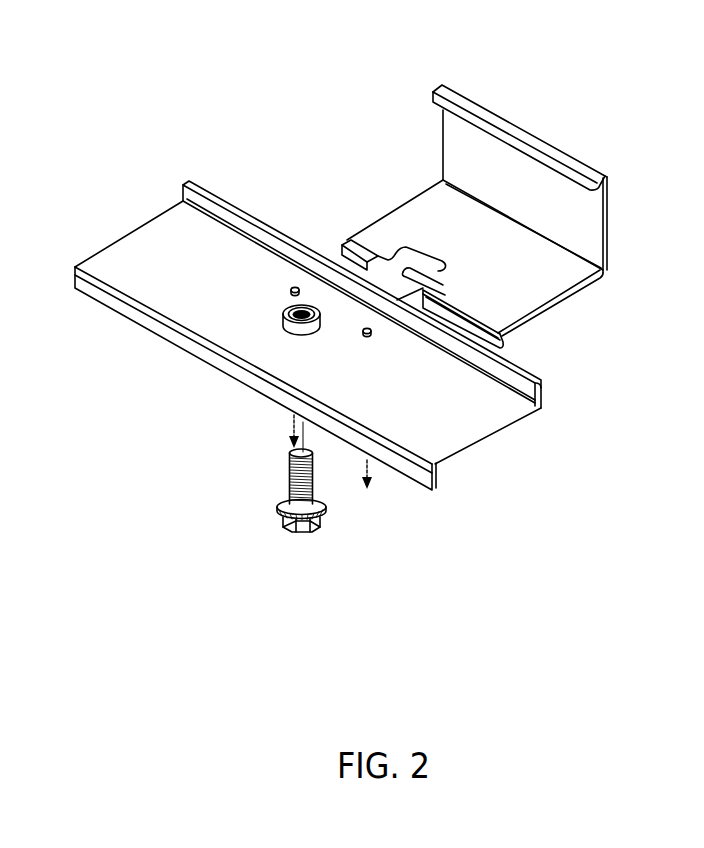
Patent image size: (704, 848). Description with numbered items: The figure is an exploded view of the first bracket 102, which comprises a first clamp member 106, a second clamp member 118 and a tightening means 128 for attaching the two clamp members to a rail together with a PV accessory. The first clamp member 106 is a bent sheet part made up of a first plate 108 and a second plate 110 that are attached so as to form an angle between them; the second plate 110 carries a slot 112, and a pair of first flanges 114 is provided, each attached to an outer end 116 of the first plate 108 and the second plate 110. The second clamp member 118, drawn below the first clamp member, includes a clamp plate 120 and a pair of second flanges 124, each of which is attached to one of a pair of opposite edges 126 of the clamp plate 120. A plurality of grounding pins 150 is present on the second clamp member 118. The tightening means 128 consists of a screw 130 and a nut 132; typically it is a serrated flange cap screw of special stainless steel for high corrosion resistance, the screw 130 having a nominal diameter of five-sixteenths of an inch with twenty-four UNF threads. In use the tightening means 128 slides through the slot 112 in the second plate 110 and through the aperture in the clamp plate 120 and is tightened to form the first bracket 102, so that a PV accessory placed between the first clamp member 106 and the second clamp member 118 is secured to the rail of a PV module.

The first bracket 102 is at (285, 85).
The first clamp member 106 is at (606, 249).
The first plate 108 is at (578, 233).
The second plate 110 is at (553, 276).
The slot 112 is at (434, 258).
The first flanges 114 is at (468, 108).
The outer end 116 is at (364, 235).
The second clamp member 118 is at (129, 229).
The clamp plate 120 is at (470, 430).
The second flanges 124 is at (543, 404).
The opposite edges 126 is at (173, 218).
The tightening means 128 is at (288, 531).
The screw 130 is at (305, 533).
The nut 132 is at (296, 334).
The grounding pins 150 is at (367, 492).